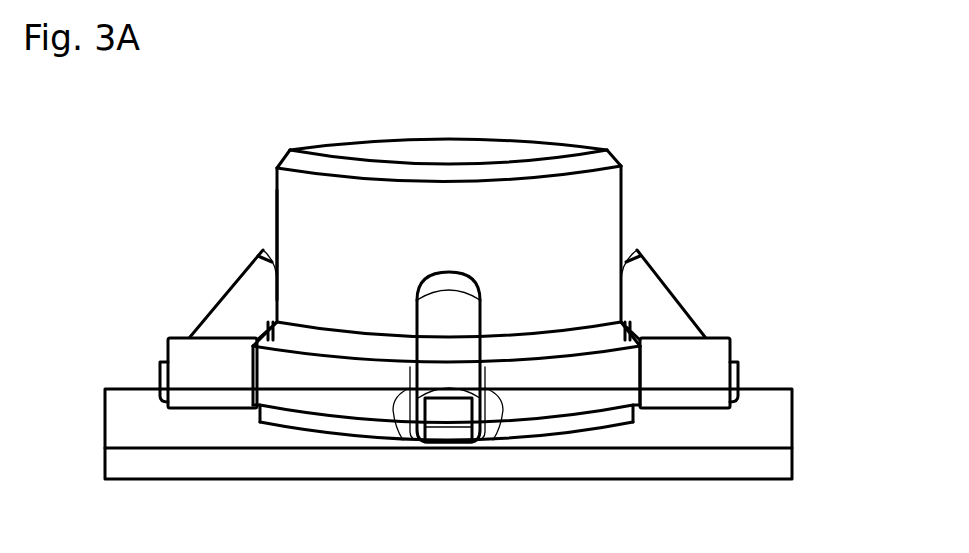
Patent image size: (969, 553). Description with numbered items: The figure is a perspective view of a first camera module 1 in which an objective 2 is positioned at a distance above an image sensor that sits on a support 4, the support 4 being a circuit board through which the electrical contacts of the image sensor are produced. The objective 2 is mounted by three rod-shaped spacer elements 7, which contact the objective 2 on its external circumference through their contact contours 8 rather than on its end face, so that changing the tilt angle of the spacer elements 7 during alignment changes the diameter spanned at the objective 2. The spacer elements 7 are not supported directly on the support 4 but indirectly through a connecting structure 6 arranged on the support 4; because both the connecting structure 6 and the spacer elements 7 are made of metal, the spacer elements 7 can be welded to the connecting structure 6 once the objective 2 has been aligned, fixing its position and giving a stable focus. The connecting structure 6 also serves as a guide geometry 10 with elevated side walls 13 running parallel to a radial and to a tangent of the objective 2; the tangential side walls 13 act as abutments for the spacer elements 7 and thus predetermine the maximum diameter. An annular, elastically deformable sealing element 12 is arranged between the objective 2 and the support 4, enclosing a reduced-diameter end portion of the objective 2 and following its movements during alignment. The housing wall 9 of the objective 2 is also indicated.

The camera module 1 is at (776, 147).
The objective 2 is at (469, 155).
The support 4 is at (765, 418).
The connecting structure 6 is at (526, 373).
The spacer elements 7 is at (232, 297).
The contact contours 8 is at (263, 253).
The housing wall 9 is at (281, 193).
The guide geometry 10 is at (685, 373).
The sealing element 12 is at (353, 425).
The side walls 13 is at (180, 352).